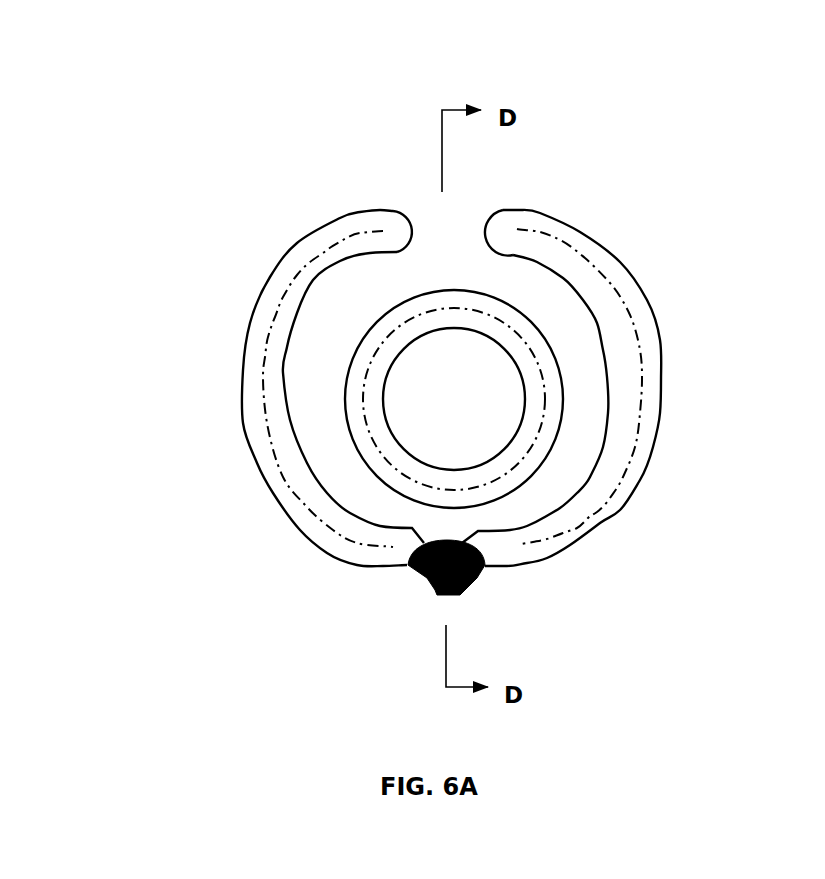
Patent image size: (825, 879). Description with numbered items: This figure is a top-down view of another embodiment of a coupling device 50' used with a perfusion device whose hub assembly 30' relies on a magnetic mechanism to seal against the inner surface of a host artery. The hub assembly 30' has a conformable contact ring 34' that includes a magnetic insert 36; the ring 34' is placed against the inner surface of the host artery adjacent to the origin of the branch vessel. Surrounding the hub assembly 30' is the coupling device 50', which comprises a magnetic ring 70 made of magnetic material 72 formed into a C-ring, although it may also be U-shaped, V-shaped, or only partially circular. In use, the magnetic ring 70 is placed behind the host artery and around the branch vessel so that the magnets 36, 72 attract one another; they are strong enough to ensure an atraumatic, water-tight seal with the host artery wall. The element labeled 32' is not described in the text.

The coupling device 50' is at (443, 319).
The magnetic ring 70 is at (322, 190).
The magnetic material 72 is at (263, 370).
The hub assembly 30' is at (542, 336).
The tube lumen 32' is at (554, 362).
The conformable contact ring 34' is at (542, 399).
The magnetic insert 36 is at (542, 427).